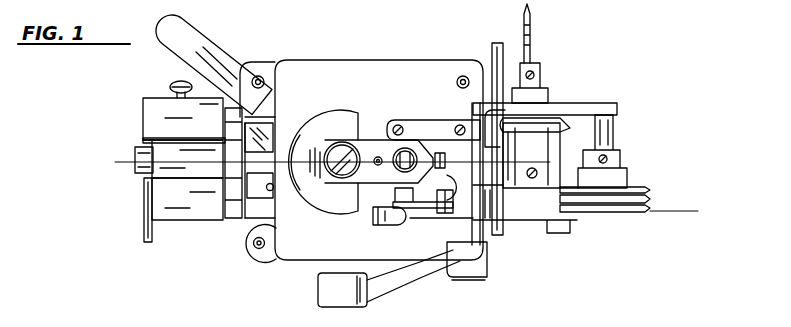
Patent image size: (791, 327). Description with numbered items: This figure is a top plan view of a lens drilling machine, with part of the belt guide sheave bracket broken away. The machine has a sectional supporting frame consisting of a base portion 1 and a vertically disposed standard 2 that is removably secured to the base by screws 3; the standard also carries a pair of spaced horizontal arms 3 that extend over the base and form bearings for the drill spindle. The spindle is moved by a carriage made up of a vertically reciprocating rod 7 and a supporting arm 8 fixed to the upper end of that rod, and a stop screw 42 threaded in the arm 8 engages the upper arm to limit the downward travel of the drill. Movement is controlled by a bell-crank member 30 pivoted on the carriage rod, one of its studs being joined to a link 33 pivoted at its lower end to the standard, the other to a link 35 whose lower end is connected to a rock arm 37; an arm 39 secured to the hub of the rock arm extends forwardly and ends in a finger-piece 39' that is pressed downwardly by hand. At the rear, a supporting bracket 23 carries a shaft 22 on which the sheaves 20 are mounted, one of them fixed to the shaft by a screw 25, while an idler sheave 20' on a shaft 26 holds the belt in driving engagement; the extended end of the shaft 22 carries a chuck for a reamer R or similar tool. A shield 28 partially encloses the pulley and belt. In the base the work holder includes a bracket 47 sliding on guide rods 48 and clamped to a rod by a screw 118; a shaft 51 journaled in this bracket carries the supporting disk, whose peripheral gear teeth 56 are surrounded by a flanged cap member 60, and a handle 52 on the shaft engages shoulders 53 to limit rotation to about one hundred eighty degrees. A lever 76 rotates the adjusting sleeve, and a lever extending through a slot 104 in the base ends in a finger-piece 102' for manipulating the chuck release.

The base portion 1 is at (378, 68).
The standard 2 is at (399, 194).
The arms 3 is at (462, 123).
The rod 7 is at (403, 149).
The supporting arm 8 is at (363, 143).
The sheaves 20 is at (545, 112).
The idler sheave 20' is at (628, 181).
The shaft 22 is at (541, 80).
The supporting bracket 23 is at (576, 219).
The screw 25 is at (532, 179).
The shaft 26 is at (613, 133).
The shield 28 is at (321, 114).
The bell-crank member 30 is at (423, 212).
The link 33 is at (459, 181).
The link 35 is at (396, 215).
The rock arm 37 is at (440, 214).
The arm 39 is at (427, 277).
The finger-piece 39' is at (342, 300).
The screw 42 is at (376, 165).
The bracket 47 is at (158, 128).
The guide rods 48 is at (248, 220).
The shaft 51 is at (137, 173).
The handle 52 is at (146, 240).
The shoulders 53 is at (148, 142).
The gear teeth 56 is at (236, 218).
The flanged cap member 60 is at (237, 190).
The lever 76 is at (491, 53).
The finger-piece 102' is at (215, 66).
The slot 104 is at (270, 250).
The screw 118 is at (168, 84).
The reamer R is at (532, 44).